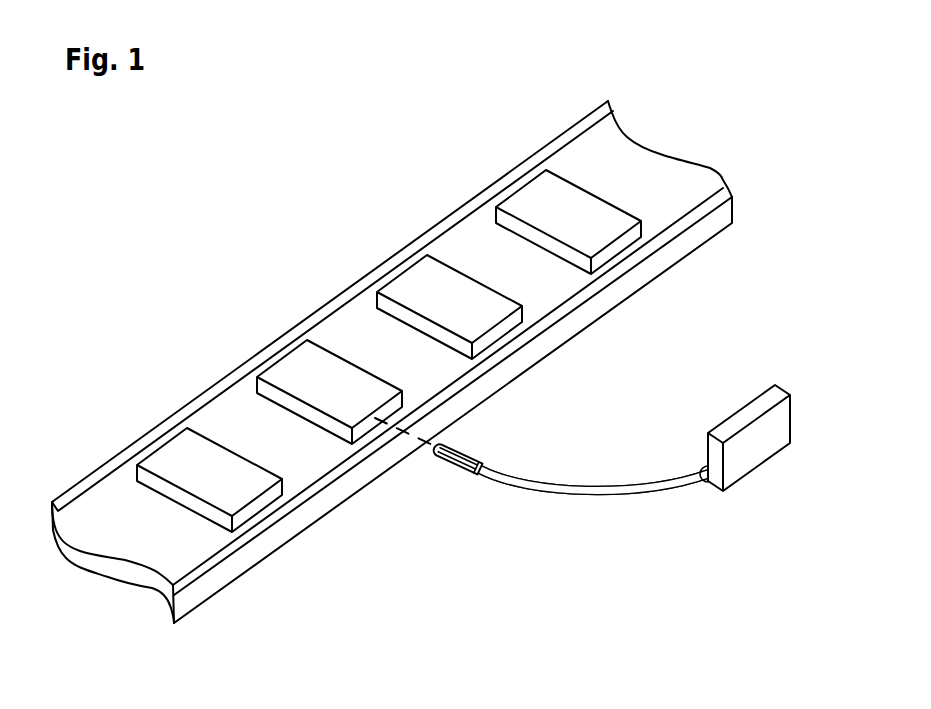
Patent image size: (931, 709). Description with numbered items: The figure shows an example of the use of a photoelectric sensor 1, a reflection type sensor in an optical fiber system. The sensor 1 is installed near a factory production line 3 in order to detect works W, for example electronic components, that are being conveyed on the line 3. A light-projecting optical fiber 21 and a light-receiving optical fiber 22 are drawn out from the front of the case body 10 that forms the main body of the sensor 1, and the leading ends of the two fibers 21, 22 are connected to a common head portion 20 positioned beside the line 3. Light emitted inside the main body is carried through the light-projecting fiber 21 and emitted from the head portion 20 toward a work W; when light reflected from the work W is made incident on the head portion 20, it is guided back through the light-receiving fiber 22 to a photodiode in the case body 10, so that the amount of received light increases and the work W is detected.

The photoelectric sensor 1 is at (635, 448).
The factory production line 3 is at (348, 310).
The work W is at (417, 277).
The case body 10 is at (762, 455).
The head portion 20 is at (453, 469).
The light-projecting optical fiber 21 is at (617, 482).
The light-receiving optical fiber 22 is at (590, 495).